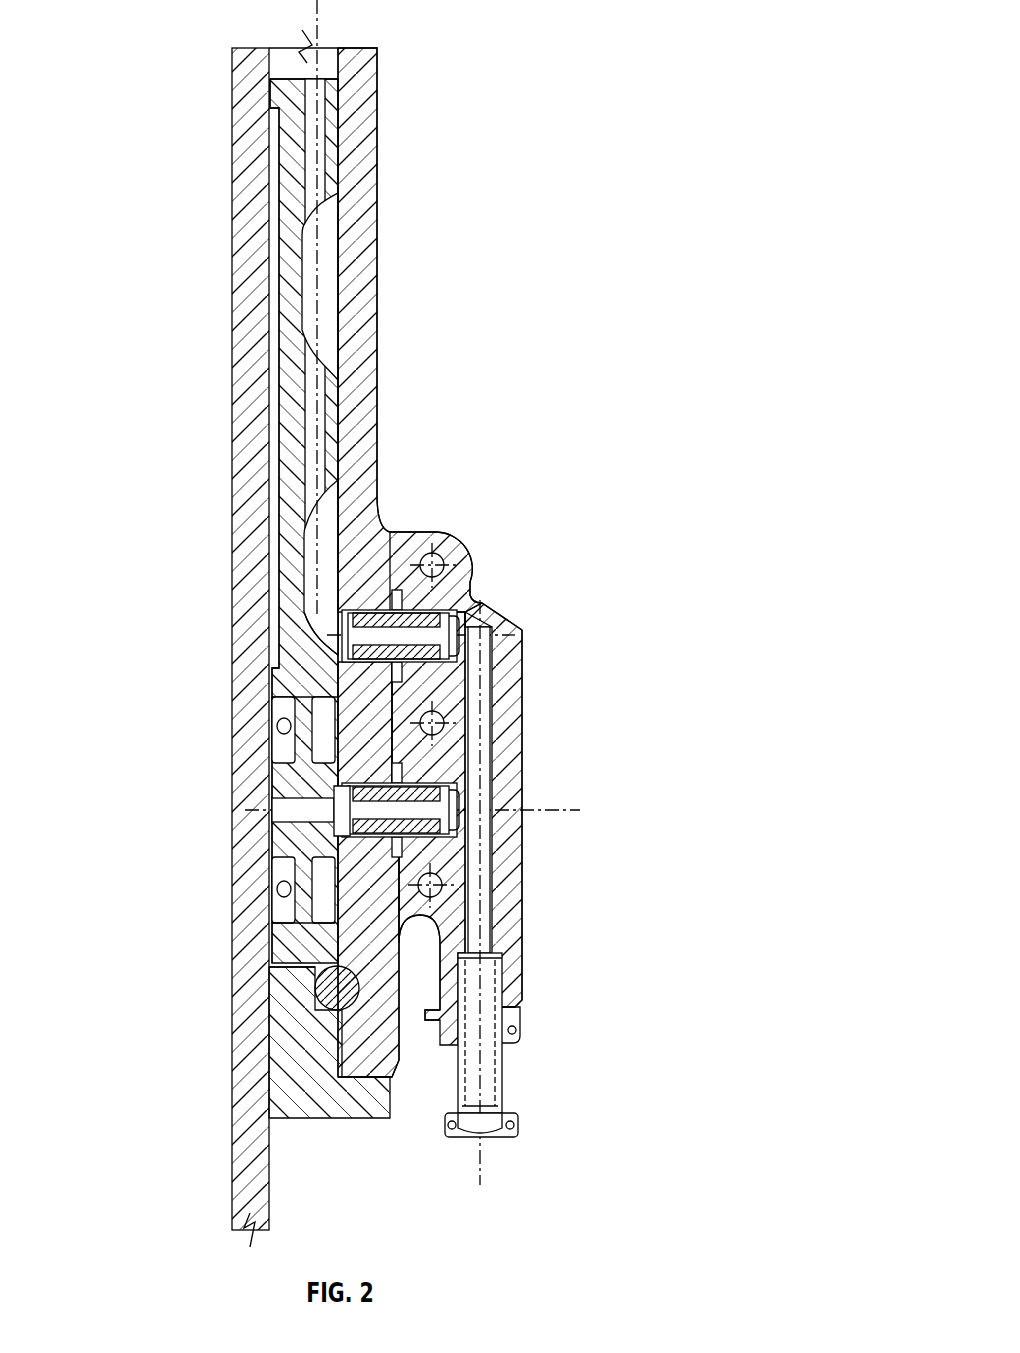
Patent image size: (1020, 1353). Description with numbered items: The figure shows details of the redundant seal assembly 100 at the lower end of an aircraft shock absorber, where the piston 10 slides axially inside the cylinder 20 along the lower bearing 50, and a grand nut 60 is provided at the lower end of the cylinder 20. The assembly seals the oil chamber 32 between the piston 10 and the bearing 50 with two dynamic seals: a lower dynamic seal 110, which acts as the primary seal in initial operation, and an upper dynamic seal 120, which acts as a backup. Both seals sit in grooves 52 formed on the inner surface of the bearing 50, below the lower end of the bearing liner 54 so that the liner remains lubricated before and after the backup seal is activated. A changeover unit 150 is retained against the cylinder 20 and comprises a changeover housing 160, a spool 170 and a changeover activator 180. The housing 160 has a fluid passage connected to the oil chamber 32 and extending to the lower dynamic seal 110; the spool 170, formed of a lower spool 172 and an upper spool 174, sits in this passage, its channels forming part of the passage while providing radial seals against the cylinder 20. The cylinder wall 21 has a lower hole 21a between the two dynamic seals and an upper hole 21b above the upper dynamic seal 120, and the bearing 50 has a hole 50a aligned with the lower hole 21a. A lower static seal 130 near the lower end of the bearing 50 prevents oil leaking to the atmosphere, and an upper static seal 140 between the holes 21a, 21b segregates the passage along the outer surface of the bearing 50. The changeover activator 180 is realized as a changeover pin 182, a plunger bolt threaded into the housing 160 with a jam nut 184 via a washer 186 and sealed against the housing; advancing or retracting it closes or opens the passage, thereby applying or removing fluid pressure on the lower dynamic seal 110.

The piston 10 is at (228, 355).
The cylinder 20 is at (378, 368).
The cylinder wall 21 is at (378, 445).
The lower hole 21a is at (333, 787).
The upper hole 21b is at (337, 623).
The oil chamber 32 is at (316, 33).
The lower bearing 50 is at (312, 155).
The hole 50a is at (293, 803).
The grooves 52 is at (278, 723).
The bearing liner 54 is at (273, 243).
The grand nut 60 is at (296, 1074).
The redundant seal assembly 100 is at (640, 770).
The lower dynamic seal 110 is at (283, 910).
The upper dynamic seal 120 is at (277, 707).
The lower static seal 130 is at (320, 893).
The upper static seal 140 is at (328, 712).
The changeover unit 150 is at (460, 570).
The changeover housing 160 is at (492, 605).
The spool 170 is at (457, 662).
The lower spool 172 is at (456, 797).
The upper spool 174 is at (447, 617).
The changeover activator 180 is at (528, 1073).
The changeover pin 182 is at (491, 1093).
The jam nut 184 is at (518, 1030).
The washer 186 is at (517, 1017).